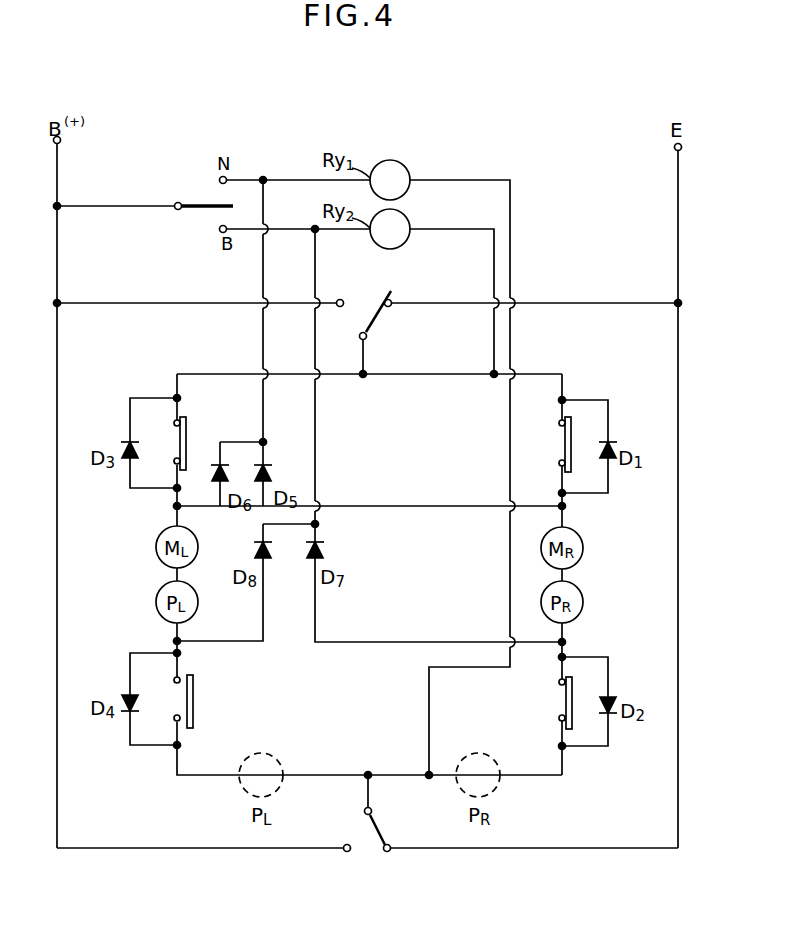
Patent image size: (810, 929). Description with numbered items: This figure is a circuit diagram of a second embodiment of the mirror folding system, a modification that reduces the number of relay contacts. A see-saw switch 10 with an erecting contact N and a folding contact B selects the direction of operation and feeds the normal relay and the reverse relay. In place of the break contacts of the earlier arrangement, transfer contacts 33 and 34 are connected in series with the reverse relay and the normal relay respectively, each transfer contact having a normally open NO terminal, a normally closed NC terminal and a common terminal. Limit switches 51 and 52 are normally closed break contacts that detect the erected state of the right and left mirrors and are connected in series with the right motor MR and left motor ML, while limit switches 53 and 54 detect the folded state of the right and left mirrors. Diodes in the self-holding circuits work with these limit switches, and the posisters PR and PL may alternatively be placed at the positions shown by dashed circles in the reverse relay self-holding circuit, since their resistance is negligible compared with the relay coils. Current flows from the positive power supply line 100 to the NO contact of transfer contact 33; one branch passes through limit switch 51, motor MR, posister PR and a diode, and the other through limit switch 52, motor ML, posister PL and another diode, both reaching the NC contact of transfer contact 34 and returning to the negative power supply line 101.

The see-saw switch 10 is at (198, 209).
The positive power supply line 100 is at (55, 282).
The negative power supply line 101 is at (678, 276).
The transfer contact 33 is at (376, 318).
The transfer contact 34 is at (385, 832).
The limit switch 51 is at (562, 447).
The limit switch 52 is at (187, 450).
The limit switch 53 is at (559, 703).
The limit switch 54 is at (194, 704).